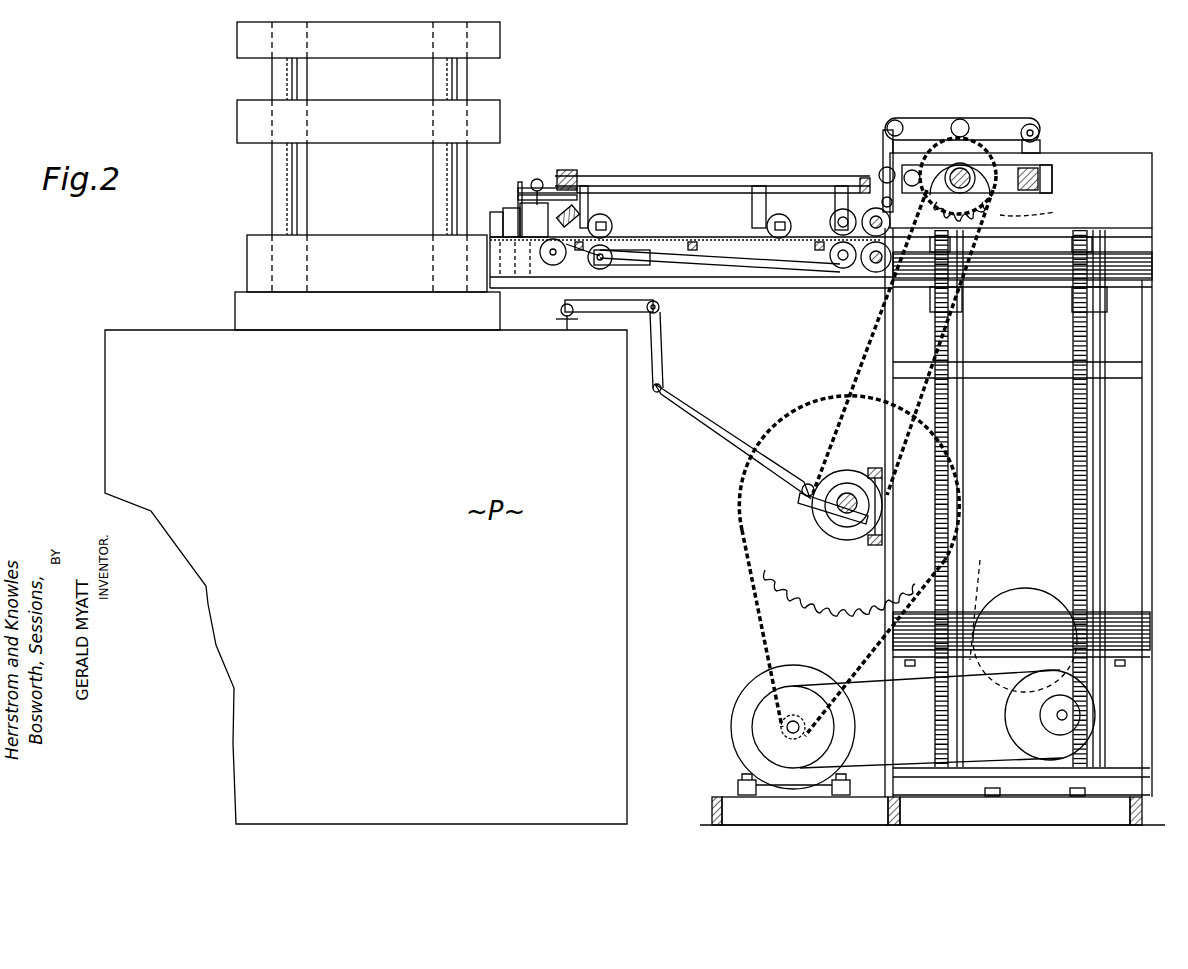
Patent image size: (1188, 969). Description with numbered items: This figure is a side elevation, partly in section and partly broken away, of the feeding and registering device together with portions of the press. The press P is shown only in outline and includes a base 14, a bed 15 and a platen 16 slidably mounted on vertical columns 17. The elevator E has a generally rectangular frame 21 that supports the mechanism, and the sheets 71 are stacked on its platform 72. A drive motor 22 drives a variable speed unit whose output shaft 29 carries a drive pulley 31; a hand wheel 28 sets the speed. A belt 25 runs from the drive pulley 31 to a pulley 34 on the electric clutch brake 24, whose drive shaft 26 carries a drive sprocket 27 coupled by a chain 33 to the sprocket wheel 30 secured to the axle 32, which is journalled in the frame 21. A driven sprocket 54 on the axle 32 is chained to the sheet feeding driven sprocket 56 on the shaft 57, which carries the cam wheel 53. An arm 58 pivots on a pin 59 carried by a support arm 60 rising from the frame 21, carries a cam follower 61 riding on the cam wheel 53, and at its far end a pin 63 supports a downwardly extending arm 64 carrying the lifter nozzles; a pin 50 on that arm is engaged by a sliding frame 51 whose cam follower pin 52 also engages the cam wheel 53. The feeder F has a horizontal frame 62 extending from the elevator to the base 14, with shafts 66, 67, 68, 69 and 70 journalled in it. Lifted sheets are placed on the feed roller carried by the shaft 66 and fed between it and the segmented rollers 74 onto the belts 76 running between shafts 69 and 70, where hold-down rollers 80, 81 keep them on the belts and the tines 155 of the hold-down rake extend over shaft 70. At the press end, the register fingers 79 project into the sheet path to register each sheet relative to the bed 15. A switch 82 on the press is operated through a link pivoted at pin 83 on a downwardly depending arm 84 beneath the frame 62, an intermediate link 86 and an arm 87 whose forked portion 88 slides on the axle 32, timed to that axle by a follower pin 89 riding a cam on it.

The base 14 is at (240, 300).
The bed 15 is at (377, 238).
The platen 16 is at (237, 115).
The vertical columns 17 is at (272, 182).
The rectangular frame 21 is at (893, 338).
The drive motor 22 is at (1022, 588).
The electric clutch brake 24 is at (735, 697).
The belt 25 is at (855, 765).
The drive shaft 26 is at (785, 724).
The drive sprocket 27 is at (795, 710).
The hand wheel 28 is at (980, 600).
The output shaft 29 is at (1055, 716).
The sprocket wheel 30 is at (760, 578).
The drive pulley 31 is at (1060, 700).
The axle 32 is at (850, 490).
The chain 33 is at (755, 608).
The pulley 34 is at (765, 742).
The pin 50 is at (870, 165).
The sliding frame 51 is at (1045, 160).
The cam follower pin 52 is at (920, 160).
The cam wheel 53 is at (990, 200).
The driven sprocket 54 is at (845, 545).
The sheet feeding driven sprocket 56 is at (1036, 212).
The shaft 57 is at (955, 168).
The arm 58 is at (1010, 118).
The pin 59 is at (1038, 125).
The support arm 60 is at (1040, 135).
The cam follower 61 is at (966, 120).
The frame 62 is at (546, 290).
The pin 63 is at (885, 130).
The downwardly extending arm 64 is at (882, 198).
The shaft 66 is at (871, 270).
The shaft 67 is at (880, 170).
The shaft 68 is at (830, 216).
The shaft 69 is at (835, 262).
The shaft 70 is at (553, 265).
The sheets 71 is at (1140, 262).
The platform 72 is at (1135, 288).
The segmented rollers 74 is at (904, 316).
The belts 76 is at (678, 236).
The fingers 79 is at (534, 178).
The hold-down roller 80 is at (782, 215).
The hold-down roller 81 is at (605, 215).
The switch 82 is at (562, 325).
The pin 83 is at (660, 312).
The downwardly depending arm 84 is at (665, 303).
The intermediate link 86 is at (665, 360).
The arm 87 is at (748, 430).
The forked portion 88 is at (805, 505).
The follower pin 89 is at (842, 470).
The fingers or tines 155 is at (528, 225).